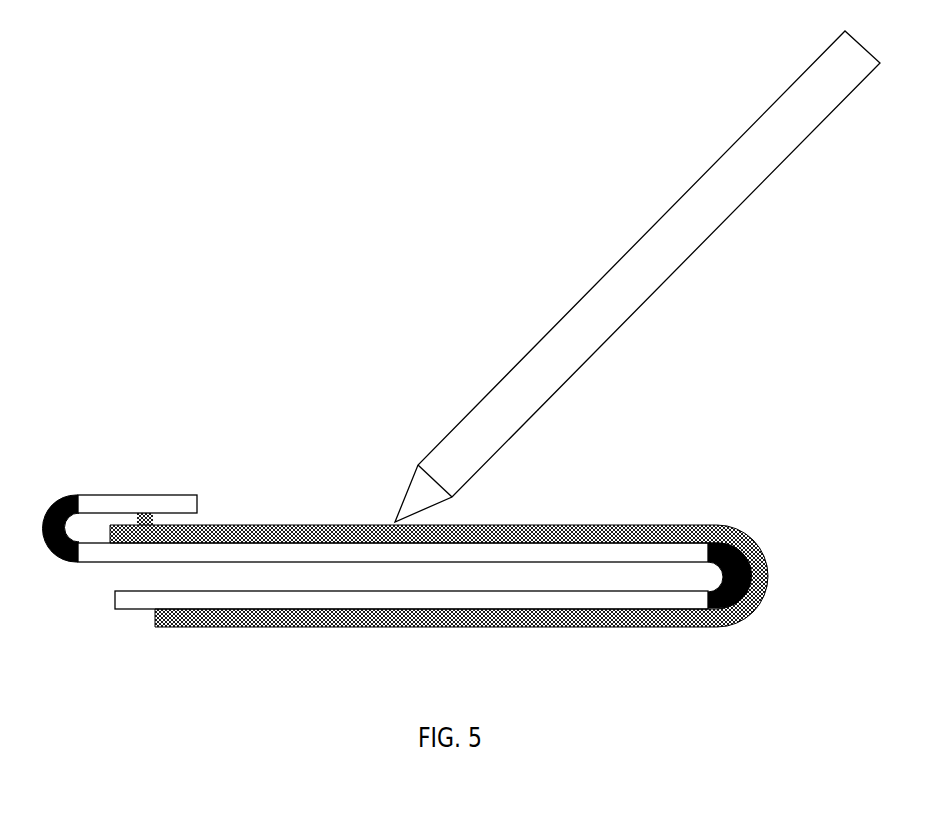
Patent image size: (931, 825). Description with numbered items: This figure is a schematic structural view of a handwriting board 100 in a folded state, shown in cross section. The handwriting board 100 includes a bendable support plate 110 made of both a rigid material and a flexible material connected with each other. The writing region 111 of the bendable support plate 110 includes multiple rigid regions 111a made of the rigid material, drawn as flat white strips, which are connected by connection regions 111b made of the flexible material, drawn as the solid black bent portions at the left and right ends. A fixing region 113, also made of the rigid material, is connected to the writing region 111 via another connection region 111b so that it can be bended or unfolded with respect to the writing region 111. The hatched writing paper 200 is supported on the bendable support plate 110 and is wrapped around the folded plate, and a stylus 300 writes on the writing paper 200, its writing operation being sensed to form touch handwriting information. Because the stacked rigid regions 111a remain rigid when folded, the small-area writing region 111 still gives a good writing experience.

The handwriting board 100 is at (406, 530).
The bendable support plate 110 is at (397, 569).
The writing region 111 is at (397, 569).
The rigid region 111a is at (298, 600).
The connection region 111b is at (63, 494).
The fixing region 113 is at (140, 494).
The writing paper 200 is at (637, 524).
The stylus 300 is at (628, 243).